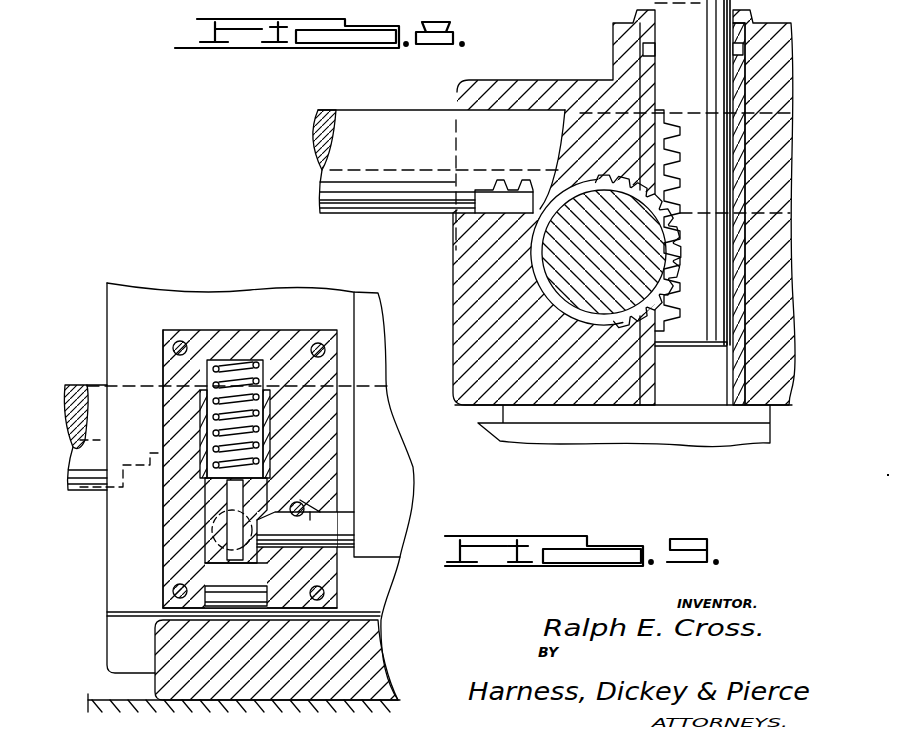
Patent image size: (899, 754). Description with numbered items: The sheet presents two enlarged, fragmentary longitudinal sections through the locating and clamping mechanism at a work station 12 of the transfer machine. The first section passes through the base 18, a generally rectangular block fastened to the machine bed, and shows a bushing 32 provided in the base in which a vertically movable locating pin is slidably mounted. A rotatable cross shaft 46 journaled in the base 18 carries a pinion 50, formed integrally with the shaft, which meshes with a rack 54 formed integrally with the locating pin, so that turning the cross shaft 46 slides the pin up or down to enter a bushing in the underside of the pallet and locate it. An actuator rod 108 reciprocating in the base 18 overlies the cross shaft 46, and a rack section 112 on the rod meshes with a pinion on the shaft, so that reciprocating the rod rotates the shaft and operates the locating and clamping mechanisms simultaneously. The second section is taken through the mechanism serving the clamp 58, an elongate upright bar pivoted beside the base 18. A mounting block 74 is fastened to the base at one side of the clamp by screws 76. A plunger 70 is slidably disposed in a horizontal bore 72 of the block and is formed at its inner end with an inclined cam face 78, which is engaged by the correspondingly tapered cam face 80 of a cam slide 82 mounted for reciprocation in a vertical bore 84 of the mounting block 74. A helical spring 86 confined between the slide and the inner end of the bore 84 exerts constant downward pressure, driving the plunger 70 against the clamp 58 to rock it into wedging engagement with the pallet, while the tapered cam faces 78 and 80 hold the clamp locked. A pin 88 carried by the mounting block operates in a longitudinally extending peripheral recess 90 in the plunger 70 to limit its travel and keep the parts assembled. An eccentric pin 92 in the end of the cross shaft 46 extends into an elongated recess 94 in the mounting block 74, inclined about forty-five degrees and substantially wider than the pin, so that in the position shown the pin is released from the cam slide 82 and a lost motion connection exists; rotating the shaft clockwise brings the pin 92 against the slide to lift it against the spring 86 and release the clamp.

In FIG. 8, the work station 12 is at (566, 47).
In FIG. 9, the work station 12 is at (139, 270).
In FIG. 8, the base 18 is at (767, 37).
In FIG. 9, the base 18 is at (372, 602).
In FIG. 8, the bushing 32 is at (737, 157).
In FIG. 8, the cross shaft 46 is at (563, 271).
In FIG. 8, the pinion 50 is at (648, 193).
In FIG. 8, the rack 54 is at (680, 162).
In FIG. 8, the rack section 112 is at (490, 214).
In FIG. 9, the clamp 58 is at (360, 333).
In FIG. 9, the plunger 70 is at (356, 535).
In FIG. 9, the horizontal bore 72 is at (352, 515).
In FIG. 9, the mounting block 74 is at (310, 411).
In FIG. 9, the screws 76 is at (185, 341).
In FIG. 9, the inclined cam face 78 is at (258, 524).
In FIG. 9, the tapered cam face 80 is at (236, 584).
In FIG. 9, the cam slide 82 is at (270, 480).
In FIG. 9, the vertical bore 84 is at (263, 373).
In FIG. 9, the helical spring 86 is at (265, 406).
In FIG. 9, the pin 88 is at (285, 503).
In FIG. 9, the peripheral recess 90 is at (300, 510).
In FIG. 9, the eccentric pin 92 is at (172, 526).
In FIG. 9, the recess 94 is at (168, 554).
In FIG. 9, the actuator rod 108 is at (86, 383).